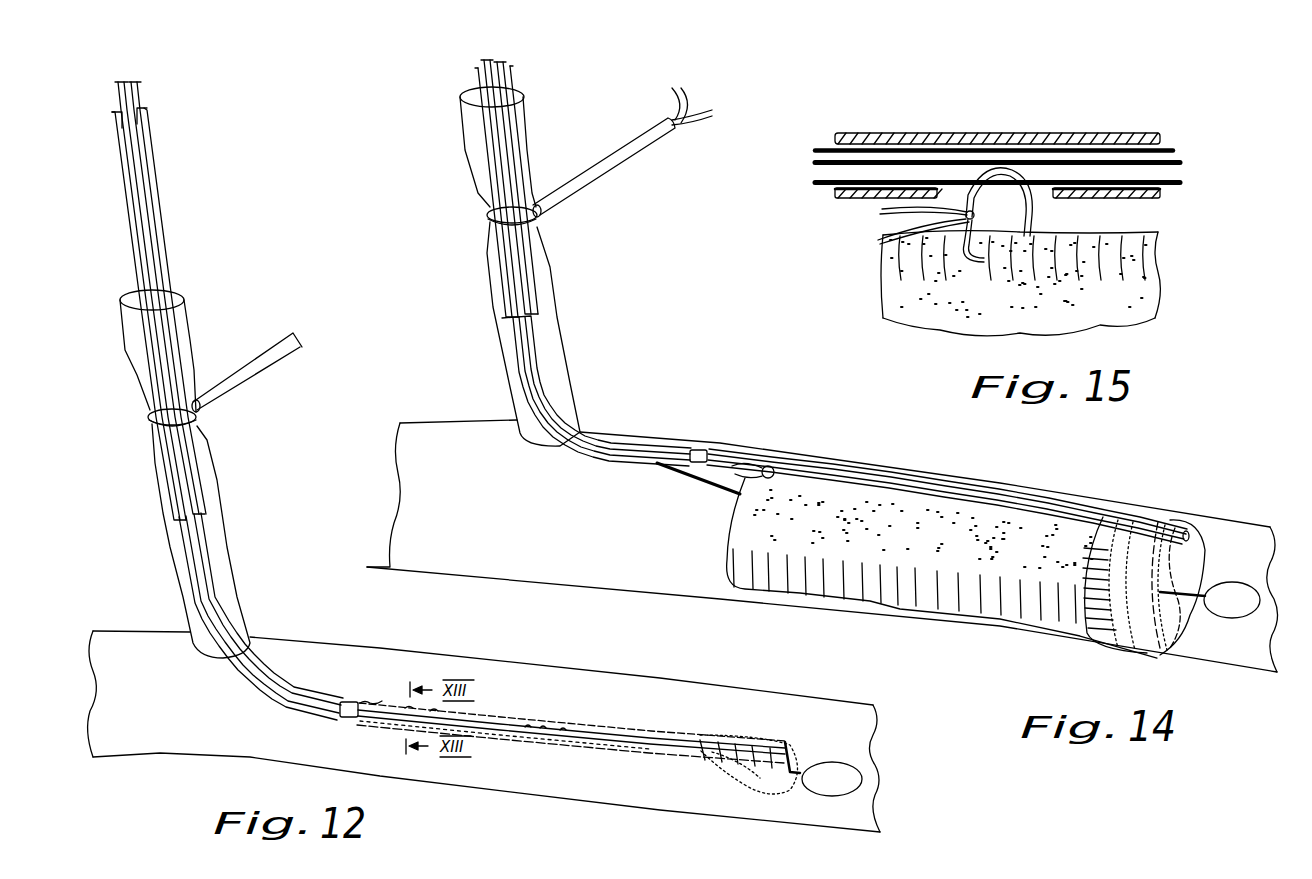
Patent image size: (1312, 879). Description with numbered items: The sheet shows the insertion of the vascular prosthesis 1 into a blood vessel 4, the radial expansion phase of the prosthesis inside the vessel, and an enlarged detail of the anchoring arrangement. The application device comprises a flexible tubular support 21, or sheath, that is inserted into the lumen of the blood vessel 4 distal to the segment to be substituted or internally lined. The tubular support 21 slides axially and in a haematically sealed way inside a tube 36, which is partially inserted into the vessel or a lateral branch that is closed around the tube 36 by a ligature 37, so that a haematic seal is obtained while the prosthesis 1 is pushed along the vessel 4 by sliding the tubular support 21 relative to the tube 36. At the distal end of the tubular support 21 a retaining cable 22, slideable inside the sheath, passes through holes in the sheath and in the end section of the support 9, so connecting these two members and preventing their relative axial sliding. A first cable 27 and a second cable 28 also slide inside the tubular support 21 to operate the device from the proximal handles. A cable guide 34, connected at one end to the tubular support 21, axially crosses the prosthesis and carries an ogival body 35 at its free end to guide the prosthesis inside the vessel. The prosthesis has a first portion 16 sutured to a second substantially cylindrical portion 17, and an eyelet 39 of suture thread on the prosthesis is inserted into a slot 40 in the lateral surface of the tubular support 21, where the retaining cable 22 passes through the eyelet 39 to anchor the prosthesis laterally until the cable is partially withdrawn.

In FIG. 12, the vascular prosthesis 1 is at (708, 727).
In FIG. 14, the vascular prosthesis 1 is at (1112, 520).
In FIG. 12, the blood vessel 4 is at (580, 687).
In FIG. 14, the blood vessel 4 is at (607, 548).
In FIG. 12, the support 9 is at (755, 743).
In FIG. 14, the support 9 is at (1148, 523).
In FIG. 14, the first portion 16 is at (1110, 640).
In FIG. 14, the second substantially cylindrical portion 17 is at (935, 597).
In FIG. 15, the second substantially cylindrical portion 17 is at (1123, 297).
In FIG. 12, the tubular support 21 is at (513, 717).
In FIG. 14, the tubular support 21 is at (883, 472).
In FIG. 15, the tubular support 21 is at (997, 133).
In FIG. 15, the retaining cable 22 is at (1177, 184).
In FIG. 15, the first cable 27 is at (1170, 148).
In FIG. 15, the second cable 28 is at (1177, 163).
In FIG. 12, the cable guide 34 is at (352, 718).
In FIG. 14, the cable guide 34 is at (690, 476).
In FIG. 12, the ogival body 35 is at (840, 775).
In FIG. 14, the ogival body 35 is at (1233, 592).
In FIG. 12, the tube 36 is at (155, 168).
In FIG. 14, the tube 36 is at (515, 128).
In FIG. 14, the ligature 37 is at (690, 125).
In FIG. 14, the eyelet 39 is at (750, 475).
In FIG. 15, the eyelet 39 is at (888, 272).
In FIG. 15, the slot 40 is at (1063, 205).